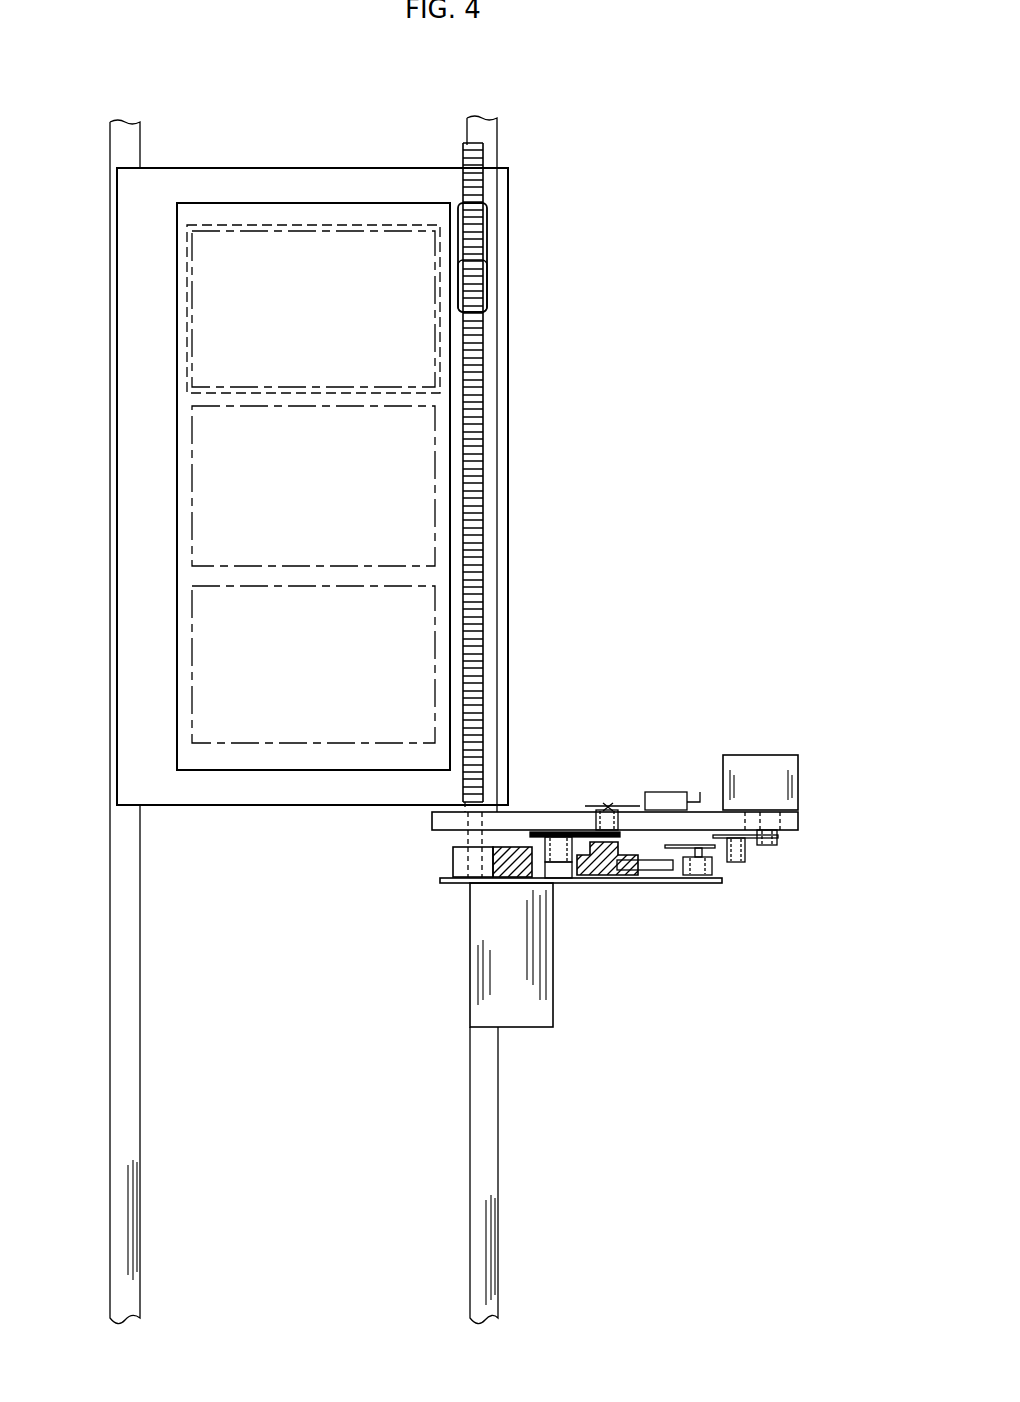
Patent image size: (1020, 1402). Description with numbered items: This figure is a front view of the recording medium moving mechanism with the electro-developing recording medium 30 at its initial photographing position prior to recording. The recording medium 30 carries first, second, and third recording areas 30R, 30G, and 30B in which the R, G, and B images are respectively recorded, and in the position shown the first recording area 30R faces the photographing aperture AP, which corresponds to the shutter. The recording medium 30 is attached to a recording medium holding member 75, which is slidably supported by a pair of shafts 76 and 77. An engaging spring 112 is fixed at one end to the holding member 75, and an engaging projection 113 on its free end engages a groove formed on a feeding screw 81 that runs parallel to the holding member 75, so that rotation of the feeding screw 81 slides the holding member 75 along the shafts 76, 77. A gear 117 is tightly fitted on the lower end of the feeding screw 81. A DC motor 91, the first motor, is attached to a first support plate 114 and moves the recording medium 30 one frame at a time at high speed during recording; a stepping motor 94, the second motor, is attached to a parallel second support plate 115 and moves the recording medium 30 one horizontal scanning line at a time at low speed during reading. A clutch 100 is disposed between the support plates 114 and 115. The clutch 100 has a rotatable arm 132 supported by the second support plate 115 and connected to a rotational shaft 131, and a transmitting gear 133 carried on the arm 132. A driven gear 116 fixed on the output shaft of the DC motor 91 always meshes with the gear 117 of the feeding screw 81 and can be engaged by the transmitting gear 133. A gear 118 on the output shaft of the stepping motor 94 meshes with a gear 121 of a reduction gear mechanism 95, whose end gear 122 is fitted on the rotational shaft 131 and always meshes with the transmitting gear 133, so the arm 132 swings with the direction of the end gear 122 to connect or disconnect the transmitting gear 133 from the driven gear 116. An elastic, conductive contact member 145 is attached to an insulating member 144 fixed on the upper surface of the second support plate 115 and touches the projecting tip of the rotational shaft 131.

The photographing aperture AP is at (245, 225).
The electro-developing recording medium 30 is at (231, 423).
The first recording area 30R is at (192, 266).
The second recording area 30G is at (192, 519).
The third recording area 30B is at (192, 630).
The recording medium holding member 75 is at (148, 728).
The shaft 76 is at (483, 1172).
The shaft 77 is at (125, 1082).
The feeding screw 81 is at (487, 550).
The DC motor 91 is at (535, 1003).
The stepping motor 94 is at (765, 757).
The reduction gear mechanism 95 is at (772, 890).
The clutch 100 is at (552, 828).
The engaging spring 112 is at (487, 222).
The engaging projection 113 is at (487, 288).
The first support plate 114 is at (460, 880).
The second support plate 115 is at (800, 822).
The driven gear 116 is at (520, 885).
The gear 117 is at (455, 862).
The gear 118 is at (778, 842).
The gear 121 is at (757, 840).
The end gear 122 is at (590, 878).
The rotational shaft 131 is at (608, 806).
The rotatable arm 132 is at (573, 832).
The transmitting gear 133 is at (570, 880).
The insulating member 144 is at (668, 797).
The contact member 145 is at (628, 808).